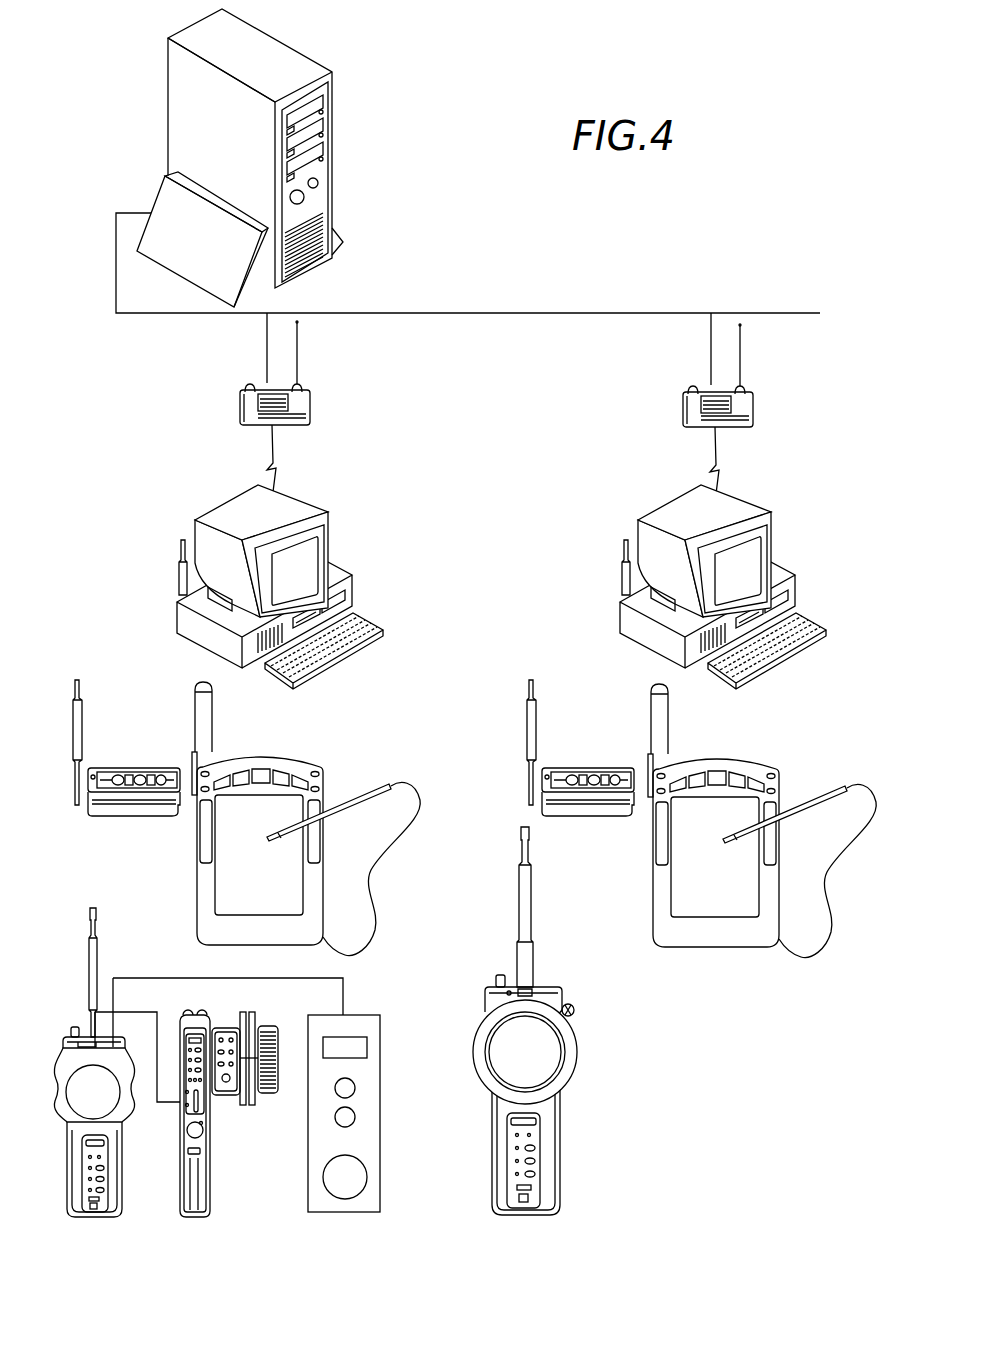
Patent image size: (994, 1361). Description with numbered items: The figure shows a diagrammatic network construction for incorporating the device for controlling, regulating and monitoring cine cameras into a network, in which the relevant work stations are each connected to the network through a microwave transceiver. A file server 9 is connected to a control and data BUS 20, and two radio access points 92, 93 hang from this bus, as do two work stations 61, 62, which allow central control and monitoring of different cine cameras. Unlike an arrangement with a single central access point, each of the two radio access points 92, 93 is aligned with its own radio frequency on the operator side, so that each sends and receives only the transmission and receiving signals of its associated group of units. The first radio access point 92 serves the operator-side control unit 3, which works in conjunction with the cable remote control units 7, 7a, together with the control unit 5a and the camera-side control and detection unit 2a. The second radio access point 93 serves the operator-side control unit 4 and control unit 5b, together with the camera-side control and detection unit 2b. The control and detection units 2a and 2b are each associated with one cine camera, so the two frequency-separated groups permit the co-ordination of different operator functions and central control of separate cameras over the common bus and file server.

The file server 9 is at (332, 117).
The control and data BUS 20 is at (582, 313).
The radio access point 92 is at (310, 400).
The radio access point 93 is at (753, 402).
The work station 61 is at (328, 500).
The work station 62 is at (771, 503).
The control and detection unit 2a is at (100, 767).
The control and detection unit 2b is at (554, 767).
The control unit 5a is at (250, 750).
The control unit 5b is at (706, 752).
The control unit 3 is at (122, 1183).
The cable remote control unit 7 is at (210, 1173).
The cable remote control unit 7a is at (380, 1143).
The control unit 4 is at (560, 1142).